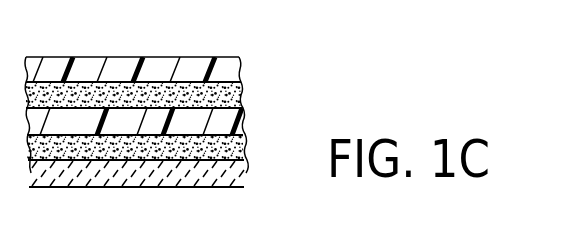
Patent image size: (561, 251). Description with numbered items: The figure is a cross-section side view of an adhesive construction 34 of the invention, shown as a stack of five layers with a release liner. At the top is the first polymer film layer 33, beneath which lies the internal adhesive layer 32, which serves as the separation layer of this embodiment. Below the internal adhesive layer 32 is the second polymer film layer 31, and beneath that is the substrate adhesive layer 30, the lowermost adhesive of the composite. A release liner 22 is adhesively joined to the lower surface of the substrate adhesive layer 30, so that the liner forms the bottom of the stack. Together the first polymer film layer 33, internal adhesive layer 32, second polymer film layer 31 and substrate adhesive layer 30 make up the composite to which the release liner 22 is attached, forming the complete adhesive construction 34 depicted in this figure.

The release liner 22 is at (246, 168).
The substrate adhesive layer 30 is at (245, 144).
The second polymer film layer 31 is at (243, 118).
The internal adhesive layer 32 is at (240, 97).
The first polymer film layer 33 is at (234, 72).
The adhesive construction 34 is at (153, 56).